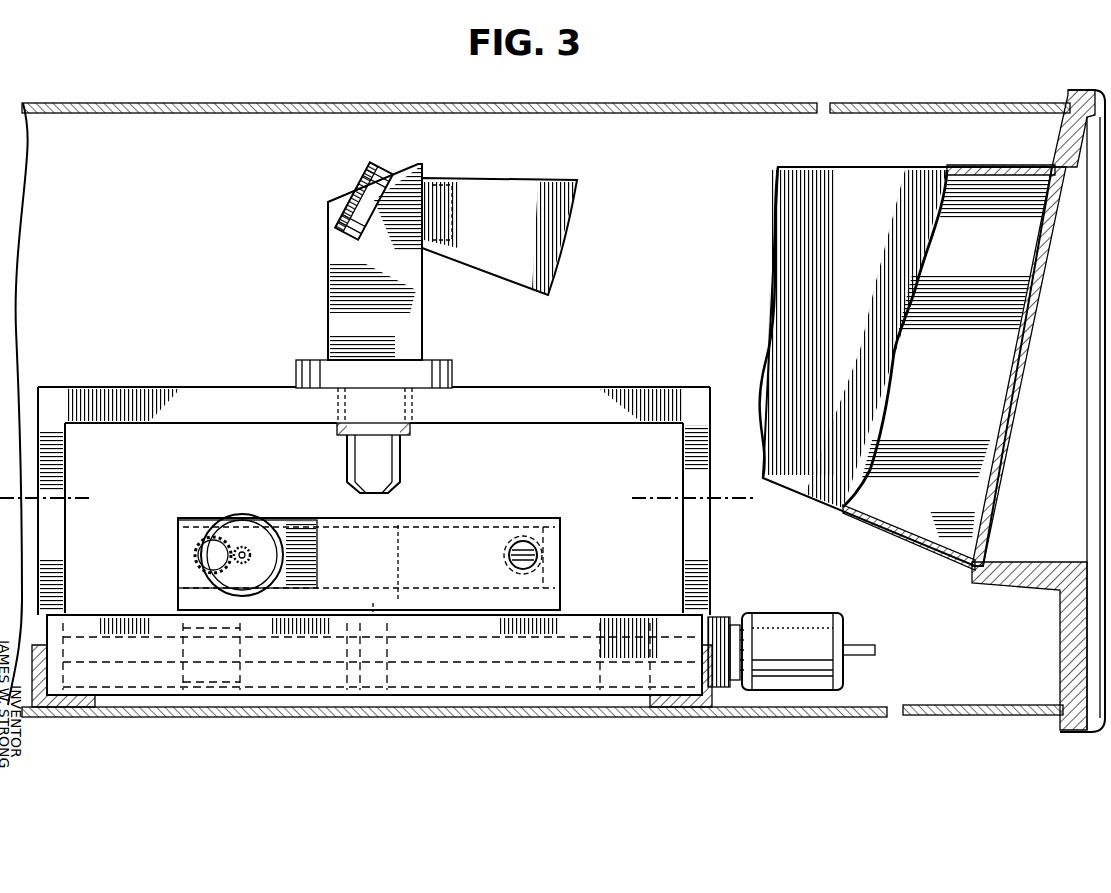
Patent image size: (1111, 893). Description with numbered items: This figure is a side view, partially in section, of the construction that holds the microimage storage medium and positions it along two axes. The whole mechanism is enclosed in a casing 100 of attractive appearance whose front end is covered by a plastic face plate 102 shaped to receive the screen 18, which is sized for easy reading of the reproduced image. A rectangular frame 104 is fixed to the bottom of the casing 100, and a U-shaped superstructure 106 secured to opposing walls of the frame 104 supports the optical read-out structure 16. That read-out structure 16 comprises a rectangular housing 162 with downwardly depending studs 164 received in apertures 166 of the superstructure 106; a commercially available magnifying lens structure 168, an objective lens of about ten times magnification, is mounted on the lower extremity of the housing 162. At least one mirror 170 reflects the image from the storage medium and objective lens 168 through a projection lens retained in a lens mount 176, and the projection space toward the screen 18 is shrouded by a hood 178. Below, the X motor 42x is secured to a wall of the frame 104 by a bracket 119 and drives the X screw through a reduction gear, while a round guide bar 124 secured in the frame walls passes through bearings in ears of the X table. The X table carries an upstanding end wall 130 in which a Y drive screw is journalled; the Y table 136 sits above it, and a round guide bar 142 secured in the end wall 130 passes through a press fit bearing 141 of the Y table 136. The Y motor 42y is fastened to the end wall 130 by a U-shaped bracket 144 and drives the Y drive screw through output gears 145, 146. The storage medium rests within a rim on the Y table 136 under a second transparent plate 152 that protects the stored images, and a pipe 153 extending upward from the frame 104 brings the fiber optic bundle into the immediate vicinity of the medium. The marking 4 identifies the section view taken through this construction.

The casing 100 is at (662, 104).
The face plate 102 is at (1083, 90).
The screen 18 is at (1017, 470).
The hood 178 is at (513, 190).
The rectangular housing 162 is at (402, 323).
The optical read-out structure 16 is at (322, 270).
The mirror 170 is at (385, 173).
The lens mount 176 is at (447, 192).
The U-shaped superstructure 106 is at (700, 550).
The apertures 166 is at (318, 428).
The studs 164 is at (440, 428).
The magnifying lens structure 168 is at (388, 471).
The section line 4- 4 is at (733, 494).
The Y table 136 is at (530, 513).
The upstanding end wall 130 is at (427, 545).
The second transparent plate 152 is at (398, 525).
The pipe 153 is at (373, 603).
The U-shaped bracket 144 is at (186, 574).
The output gear 145 is at (236, 516).
The output gear 146 is at (195, 548).
The Y motor 42y is at (252, 535).
The round guide bar 142 is at (531, 561).
The press fit bearing 141 is at (502, 553).
The round guide bar 124 is at (628, 667).
The rectangular frame 104 is at (703, 718).
The bracket 119 is at (722, 622).
The X motor 42x is at (793, 637).